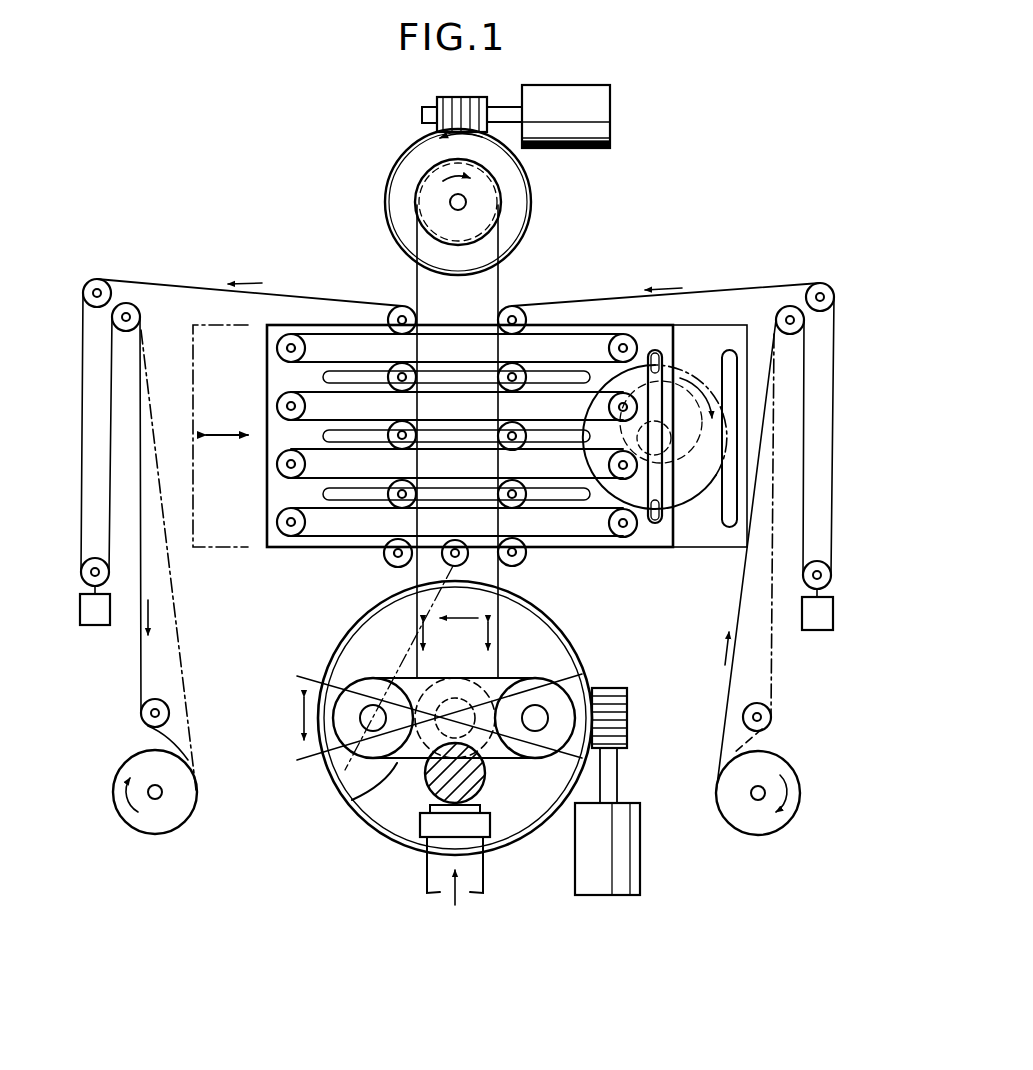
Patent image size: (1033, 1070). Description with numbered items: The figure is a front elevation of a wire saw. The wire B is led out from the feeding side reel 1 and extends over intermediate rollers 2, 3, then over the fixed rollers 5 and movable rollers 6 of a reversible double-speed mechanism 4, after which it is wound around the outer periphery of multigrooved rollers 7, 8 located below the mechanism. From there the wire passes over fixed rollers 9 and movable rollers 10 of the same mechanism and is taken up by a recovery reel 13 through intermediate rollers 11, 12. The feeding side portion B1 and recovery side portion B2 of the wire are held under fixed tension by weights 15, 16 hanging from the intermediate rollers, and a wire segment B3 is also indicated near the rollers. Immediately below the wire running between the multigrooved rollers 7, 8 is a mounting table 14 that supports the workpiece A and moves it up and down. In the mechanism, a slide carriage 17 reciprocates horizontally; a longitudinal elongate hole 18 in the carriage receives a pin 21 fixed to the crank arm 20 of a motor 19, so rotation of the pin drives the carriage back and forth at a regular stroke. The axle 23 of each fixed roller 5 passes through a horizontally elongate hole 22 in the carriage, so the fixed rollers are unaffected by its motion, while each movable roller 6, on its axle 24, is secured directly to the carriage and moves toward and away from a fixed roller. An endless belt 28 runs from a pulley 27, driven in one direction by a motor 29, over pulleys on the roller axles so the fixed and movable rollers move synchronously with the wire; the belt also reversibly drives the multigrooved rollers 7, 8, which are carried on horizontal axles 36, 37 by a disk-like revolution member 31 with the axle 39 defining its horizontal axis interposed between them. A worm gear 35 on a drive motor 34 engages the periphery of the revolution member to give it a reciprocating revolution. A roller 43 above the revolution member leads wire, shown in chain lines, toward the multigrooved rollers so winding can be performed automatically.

The feeding side reel 1 is at (770, 823).
The intermediate roller 2 is at (804, 320).
The intermediate roller 3 is at (834, 296).
The reversible double-speed mechanism 4 is at (650, 323).
The fixed roller 5 is at (514, 424).
The movable roller 6 is at (623, 395).
The multigrooved roller 7 is at (548, 690).
The multigrooved roller 8 is at (362, 693).
The fixed roller 9 is at (402, 377).
The movable roller 10 is at (291, 406).
The intermediate roller 11 is at (83, 294).
The intermediate roller 12 is at (112, 318).
The recovery reel 13 is at (167, 822).
The mounting table 14 is at (480, 873).
The weight 15 is at (833, 612).
The weight 16 is at (80, 612).
The slide carriage 17 is at (284, 548).
The longitudinal elongate hole 18 is at (655, 525).
The motor 19 is at (684, 440).
The crank arm 20 is at (700, 362).
The pin 21 is at (665, 360).
The horizontally elongate hole 22 is at (553, 435).
The axle 23 is at (514, 498).
The axle 24 is at (623, 530).
The pulley 27 is at (428, 190).
The endless belt 28 is at (505, 242).
The motor 29 is at (610, 118).
The revolution member 31 is at (440, 782).
The drive motor 34 is at (632, 845).
The worm gear 35 is at (627, 722).
The horizontal axle 36 is at (540, 727).
The horizontal axle 37 is at (352, 742).
The axle 39 is at (410, 673).
The roller 43 is at (444, 558).
The workpiece A is at (432, 792).
The wire B is at (718, 748).
The feeding side portion B1 is at (722, 680).
The recovery side portion B2 is at (160, 244).
The web segment B3 is at (383, 805).